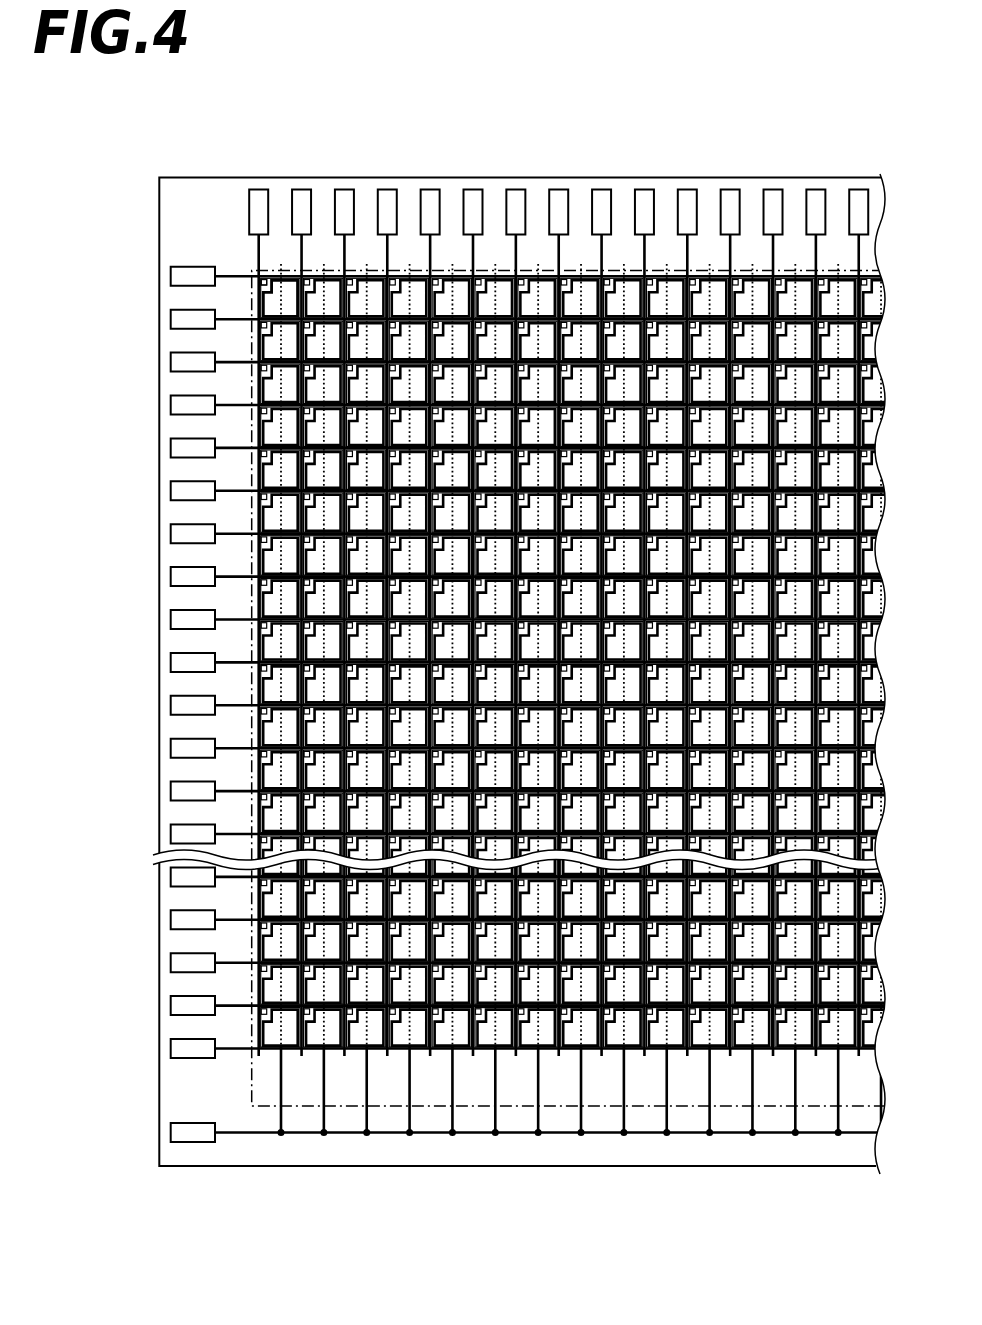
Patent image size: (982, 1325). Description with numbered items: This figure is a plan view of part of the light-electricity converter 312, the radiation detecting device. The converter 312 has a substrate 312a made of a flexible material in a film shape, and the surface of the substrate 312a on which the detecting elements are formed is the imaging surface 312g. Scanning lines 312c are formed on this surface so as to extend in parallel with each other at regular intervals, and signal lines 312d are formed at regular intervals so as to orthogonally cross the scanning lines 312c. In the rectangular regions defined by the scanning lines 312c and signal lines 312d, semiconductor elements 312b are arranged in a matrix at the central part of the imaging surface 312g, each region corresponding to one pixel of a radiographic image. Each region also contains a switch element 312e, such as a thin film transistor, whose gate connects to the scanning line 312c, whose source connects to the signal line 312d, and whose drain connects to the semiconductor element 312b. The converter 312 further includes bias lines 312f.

The light-electricity converter 312 is at (504, 125).
The substrate 312a is at (345, 176).
The semiconductor elements 312b is at (268, 308).
The scanning lines 312c is at (560, 262).
The signal lines 312d is at (240, 577).
The switch element 312e is at (260, 282).
The bias lines 312f is at (409, 1085).
The imaging surface 312g is at (203, 197).